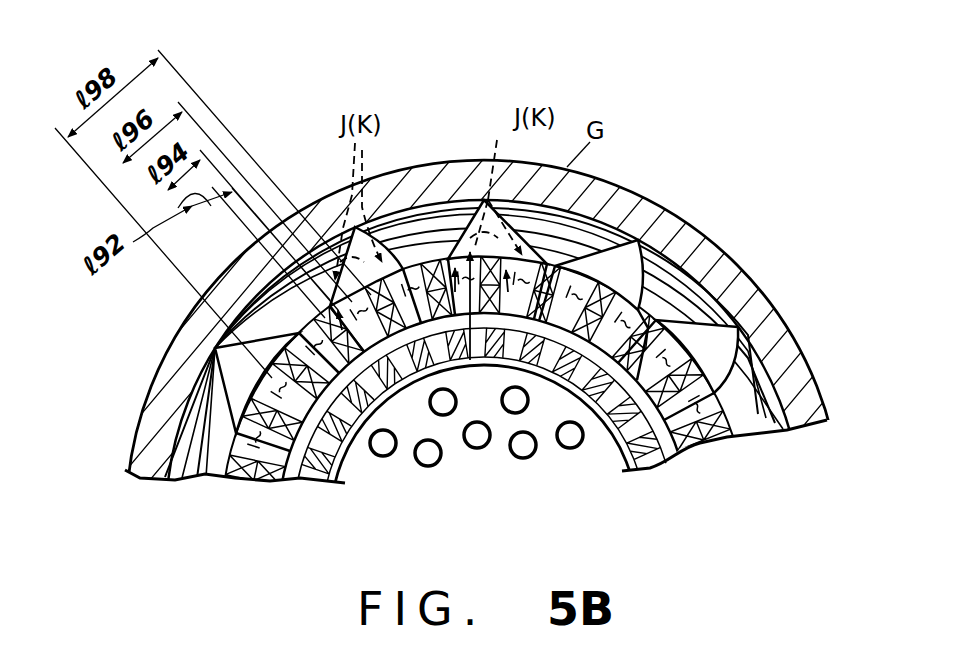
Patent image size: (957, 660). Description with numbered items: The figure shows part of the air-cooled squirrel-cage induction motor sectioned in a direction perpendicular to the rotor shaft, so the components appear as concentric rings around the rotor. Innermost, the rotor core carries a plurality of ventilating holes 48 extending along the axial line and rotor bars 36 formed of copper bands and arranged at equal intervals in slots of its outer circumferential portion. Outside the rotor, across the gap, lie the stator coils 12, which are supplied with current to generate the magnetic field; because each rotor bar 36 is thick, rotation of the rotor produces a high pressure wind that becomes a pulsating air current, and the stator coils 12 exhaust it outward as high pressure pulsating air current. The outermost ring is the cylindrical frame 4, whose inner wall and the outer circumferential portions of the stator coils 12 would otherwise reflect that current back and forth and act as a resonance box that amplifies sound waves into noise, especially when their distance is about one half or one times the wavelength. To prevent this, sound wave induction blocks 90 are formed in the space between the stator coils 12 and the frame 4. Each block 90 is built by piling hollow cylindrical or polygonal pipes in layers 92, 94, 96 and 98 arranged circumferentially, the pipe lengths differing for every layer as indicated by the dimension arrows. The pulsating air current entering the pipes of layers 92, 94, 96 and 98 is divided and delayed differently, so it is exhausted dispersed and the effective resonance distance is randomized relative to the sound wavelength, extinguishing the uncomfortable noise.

The cylindrical motor housing or frame 4 is at (478, 334).
The stator coils 12 is at (476, 325).
The rotor bars 36 is at (484, 437).
The ventilating holes 48 is at (476, 426).
The sound wave induction blocks 90 is at (461, 342).
The layer of pipes 92 is at (484, 387).
The layer of pipes 94 is at (494, 359).
The layer of pipes 96 is at (486, 353).
The layer of pipes 98 is at (474, 346).